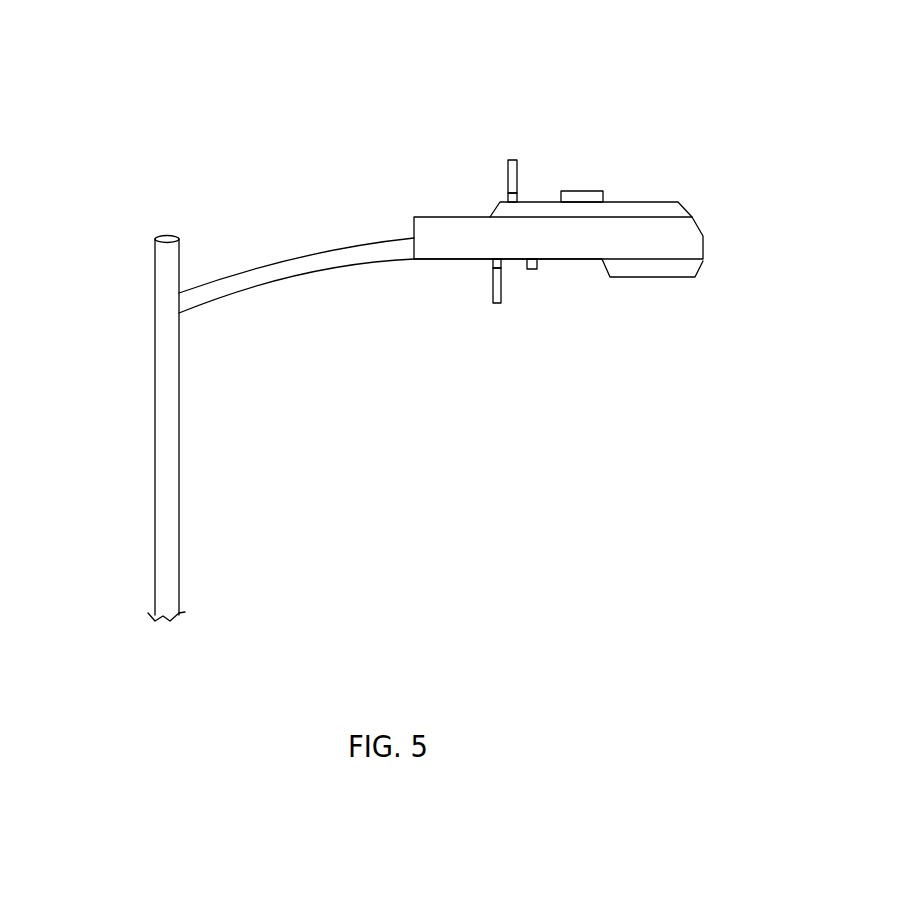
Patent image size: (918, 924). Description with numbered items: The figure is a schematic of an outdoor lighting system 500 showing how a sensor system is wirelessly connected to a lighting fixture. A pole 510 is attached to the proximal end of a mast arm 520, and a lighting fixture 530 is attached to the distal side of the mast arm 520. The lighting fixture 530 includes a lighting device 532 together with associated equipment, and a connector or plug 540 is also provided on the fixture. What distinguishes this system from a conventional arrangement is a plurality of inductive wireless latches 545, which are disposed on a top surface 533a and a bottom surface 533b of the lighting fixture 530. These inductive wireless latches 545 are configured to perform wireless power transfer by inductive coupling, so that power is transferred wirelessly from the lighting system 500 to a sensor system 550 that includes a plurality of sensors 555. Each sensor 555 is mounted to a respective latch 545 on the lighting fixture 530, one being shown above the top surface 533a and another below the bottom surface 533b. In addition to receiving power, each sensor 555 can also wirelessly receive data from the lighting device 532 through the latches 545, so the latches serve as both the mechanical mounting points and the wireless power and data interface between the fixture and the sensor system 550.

The outdoor lighting system 500 is at (276, 128).
The pole 510 is at (153, 313).
The mast arm 520 is at (278, 260).
The lighting fixture 530 is at (703, 227).
The lighting device 532 is at (665, 280).
The top surface 533a is at (663, 202).
The bottom surface 533b is at (425, 260).
The connector or plug 540 is at (595, 190).
The inductive wireless latch 545 is at (507, 200).
The sensor system 550 is at (525, 123).
The sensor 555 is at (515, 173).